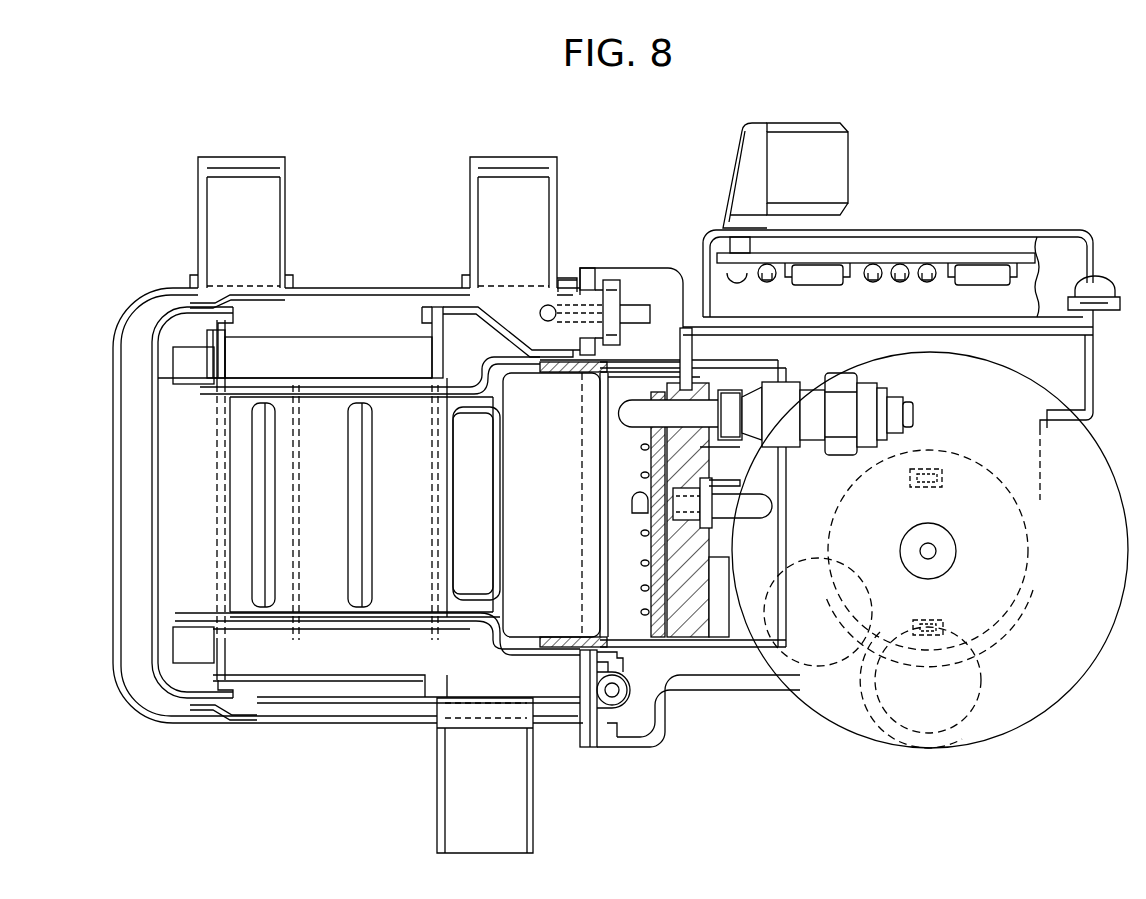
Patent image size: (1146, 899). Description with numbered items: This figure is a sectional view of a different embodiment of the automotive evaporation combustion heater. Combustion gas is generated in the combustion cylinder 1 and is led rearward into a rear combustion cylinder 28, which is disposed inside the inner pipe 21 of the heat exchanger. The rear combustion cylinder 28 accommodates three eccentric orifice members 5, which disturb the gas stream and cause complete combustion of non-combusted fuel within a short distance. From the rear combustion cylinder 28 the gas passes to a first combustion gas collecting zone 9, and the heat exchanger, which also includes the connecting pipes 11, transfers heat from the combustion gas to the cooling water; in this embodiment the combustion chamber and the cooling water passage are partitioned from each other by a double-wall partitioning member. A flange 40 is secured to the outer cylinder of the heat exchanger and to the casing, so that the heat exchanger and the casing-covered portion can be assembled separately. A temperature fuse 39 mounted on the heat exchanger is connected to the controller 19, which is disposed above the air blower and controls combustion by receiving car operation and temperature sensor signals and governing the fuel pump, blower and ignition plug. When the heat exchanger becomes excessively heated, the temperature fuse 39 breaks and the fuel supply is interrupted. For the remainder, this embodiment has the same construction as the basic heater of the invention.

The combustion cylinder 1 is at (528, 640).
The eccentric orifice members 5 is at (367, 487).
The first combustion gas collecting zone 9 is at (180, 460).
The connecting pipes 11 is at (257, 350).
The controller 19 is at (940, 246).
The inner pipe 21 is at (280, 620).
The rear combustion cylinder 28 is at (372, 620).
The temperature fuse 39 is at (612, 690).
The flange 40 is at (588, 737).